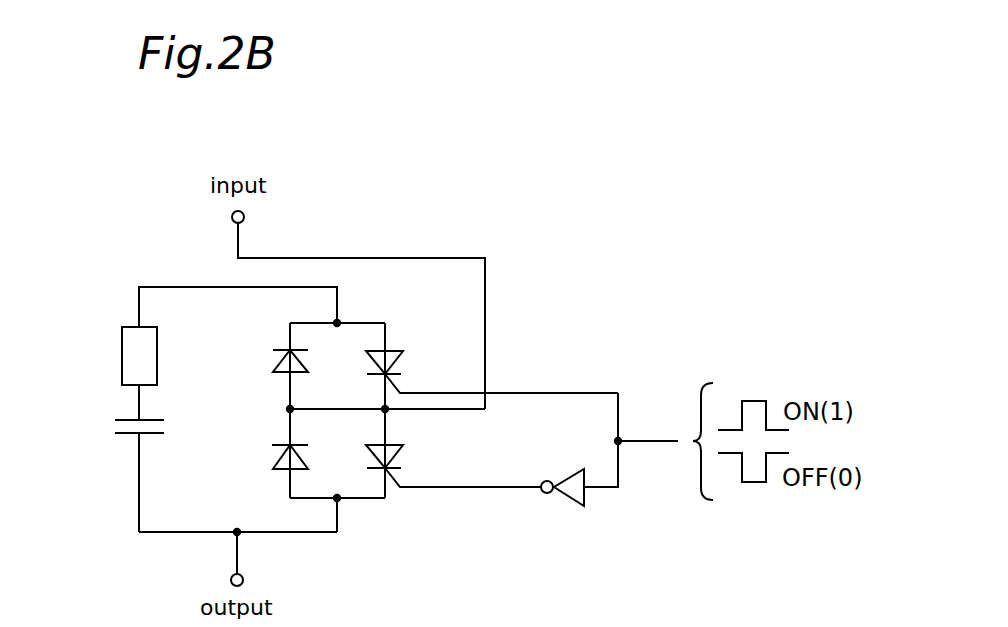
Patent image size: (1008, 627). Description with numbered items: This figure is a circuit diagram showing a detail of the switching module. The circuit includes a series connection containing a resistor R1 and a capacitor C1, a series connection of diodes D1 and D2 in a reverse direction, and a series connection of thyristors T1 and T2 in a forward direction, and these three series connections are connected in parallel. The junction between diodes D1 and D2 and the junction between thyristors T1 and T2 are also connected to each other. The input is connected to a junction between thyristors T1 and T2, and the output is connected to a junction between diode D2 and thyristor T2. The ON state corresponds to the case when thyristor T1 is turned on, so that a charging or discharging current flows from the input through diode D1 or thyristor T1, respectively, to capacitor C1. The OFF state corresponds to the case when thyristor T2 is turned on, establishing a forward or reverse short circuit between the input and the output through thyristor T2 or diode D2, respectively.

The resistor R1 is at (122, 355).
The capacitor C1 is at (128, 436).
The diode D1 is at (274, 357).
The diode D2 is at (273, 456).
The thyristor T1 is at (395, 361).
The thyristor T2 is at (395, 455).